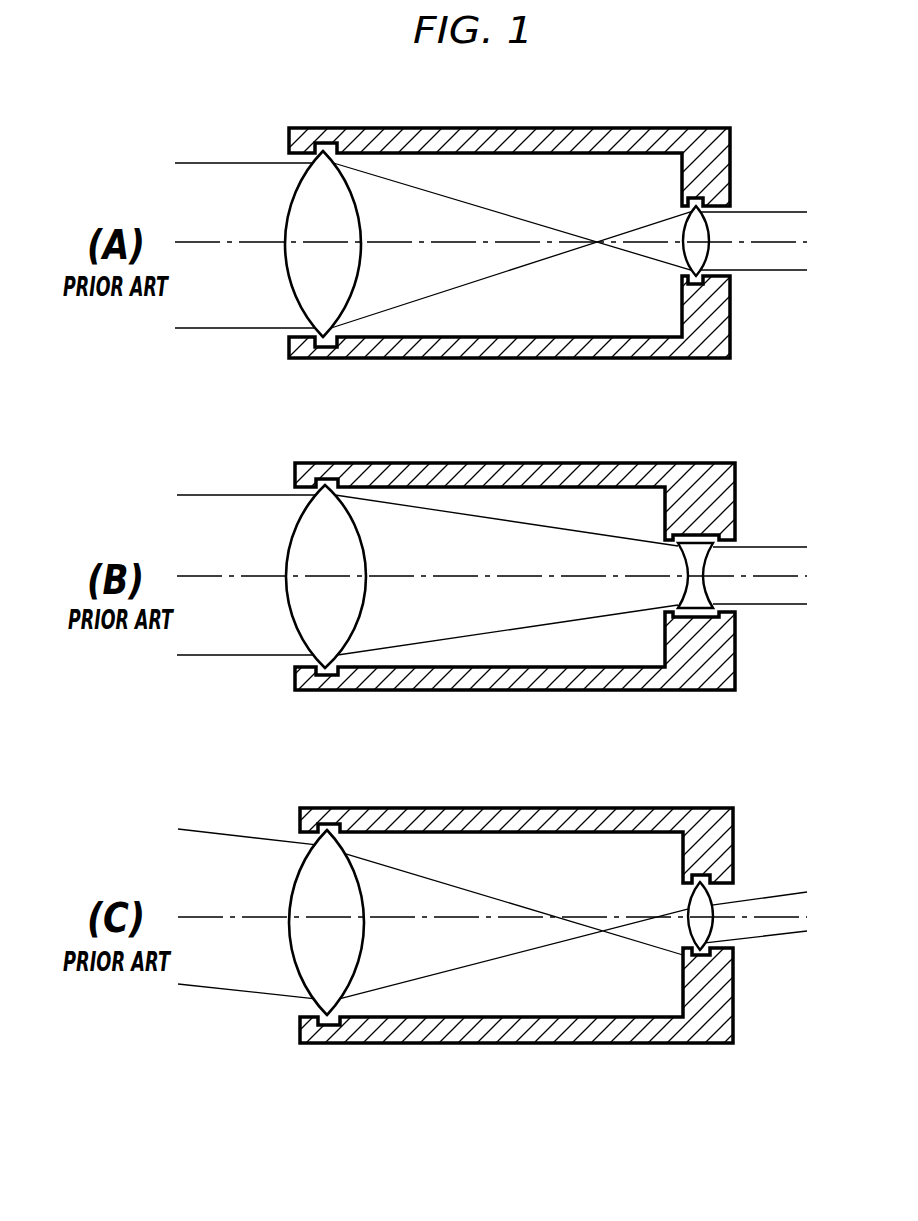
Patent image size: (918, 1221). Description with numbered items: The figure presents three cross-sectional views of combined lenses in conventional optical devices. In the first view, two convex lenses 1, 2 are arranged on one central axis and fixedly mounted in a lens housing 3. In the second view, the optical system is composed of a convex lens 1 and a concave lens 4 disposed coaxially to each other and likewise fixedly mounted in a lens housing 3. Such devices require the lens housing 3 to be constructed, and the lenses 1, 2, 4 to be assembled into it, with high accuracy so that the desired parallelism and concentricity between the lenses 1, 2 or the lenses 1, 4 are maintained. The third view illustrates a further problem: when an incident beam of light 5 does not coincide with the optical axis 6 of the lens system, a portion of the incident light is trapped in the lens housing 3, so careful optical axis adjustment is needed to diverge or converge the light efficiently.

The convex lens 1 is at (293, 275).
The convex lens 2 is at (705, 225).
The lens housing 3 is at (528, 152).
The concave lens 4 is at (703, 560).
The incident beam of light 5 is at (217, 331).
The optical axis 6 is at (208, 241).